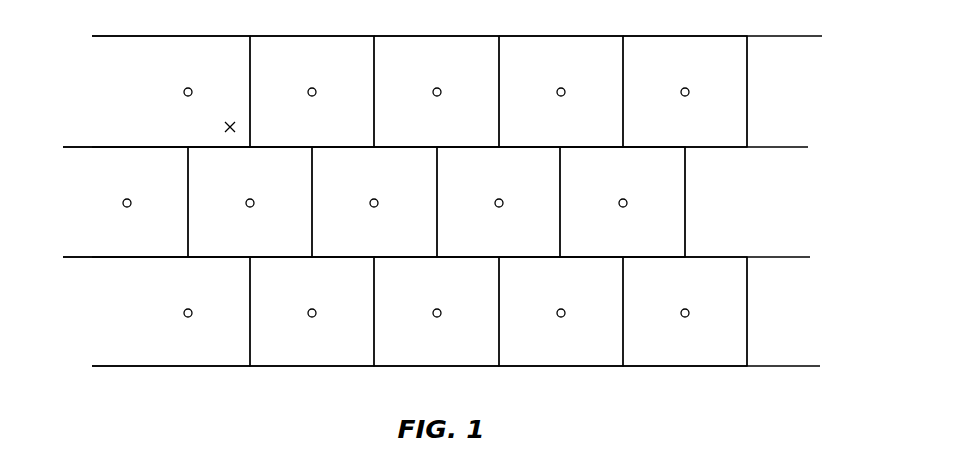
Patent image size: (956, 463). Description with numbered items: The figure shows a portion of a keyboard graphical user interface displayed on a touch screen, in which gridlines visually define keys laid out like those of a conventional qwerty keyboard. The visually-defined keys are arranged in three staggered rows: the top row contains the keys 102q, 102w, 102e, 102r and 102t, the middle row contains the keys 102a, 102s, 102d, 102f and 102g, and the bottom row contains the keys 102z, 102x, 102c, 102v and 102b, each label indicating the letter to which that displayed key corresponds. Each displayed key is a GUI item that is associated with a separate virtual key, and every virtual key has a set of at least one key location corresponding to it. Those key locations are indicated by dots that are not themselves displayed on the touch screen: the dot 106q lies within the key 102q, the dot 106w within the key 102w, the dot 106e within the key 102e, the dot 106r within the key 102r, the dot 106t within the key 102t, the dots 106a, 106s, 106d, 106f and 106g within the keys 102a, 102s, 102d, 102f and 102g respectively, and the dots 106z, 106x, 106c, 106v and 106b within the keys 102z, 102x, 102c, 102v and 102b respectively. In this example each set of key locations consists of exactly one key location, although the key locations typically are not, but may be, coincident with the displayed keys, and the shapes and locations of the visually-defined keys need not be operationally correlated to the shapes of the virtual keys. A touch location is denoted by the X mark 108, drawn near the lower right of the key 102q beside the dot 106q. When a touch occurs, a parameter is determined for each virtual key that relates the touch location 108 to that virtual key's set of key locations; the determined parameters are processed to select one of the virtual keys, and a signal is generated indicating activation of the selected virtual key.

The visually-defined key 102q is at (171, 91).
The key location 106q is at (188, 111).
The visually-defined key 102w is at (312, 91).
The key location 106w is at (312, 111).
The visually-defined key 102e is at (436, 91).
The key location 106e is at (437, 111).
The visually-defined key 102r is at (561, 91).
The key location 106r is at (561, 111).
The visually-defined key 102t is at (685, 91).
The key location 106t is at (685, 111).
The visually-defined key 102a is at (125, 202).
The key location 106a is at (127, 222).
The visually-defined key 102s is at (250, 202).
The key location 106s is at (250, 222).
The visually-defined key 102d is at (374, 202).
The key location 106d is at (374, 222).
The visually-defined key 102f is at (498, 202).
The key location 106f is at (499, 222).
The visually-defined key 102g is at (622, 202).
The key location 106g is at (623, 222).
The visually-defined key 102z is at (171, 311).
The key location 106z is at (188, 332).
The visually-defined key 102x is at (312, 311).
The key location 106x is at (312, 332).
The visually-defined key 102c is at (436, 311).
The key location 106c is at (437, 332).
The visually-defined key 102v is at (561, 311).
The key location 106v is at (561, 332).
The visually-defined key 102b is at (685, 311).
The key location 106b is at (685, 332).
The touch location 108 is at (229, 120).